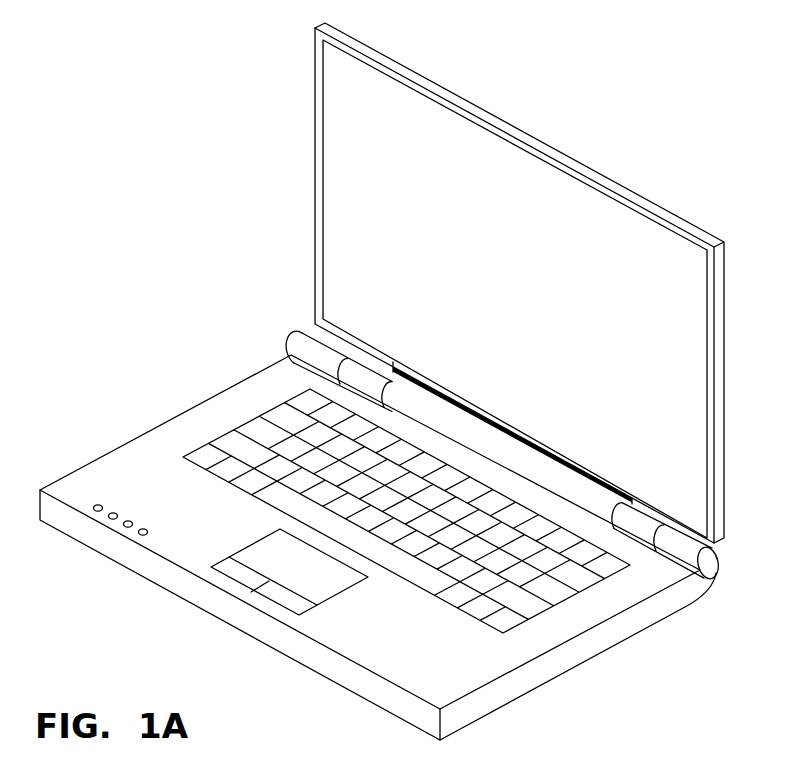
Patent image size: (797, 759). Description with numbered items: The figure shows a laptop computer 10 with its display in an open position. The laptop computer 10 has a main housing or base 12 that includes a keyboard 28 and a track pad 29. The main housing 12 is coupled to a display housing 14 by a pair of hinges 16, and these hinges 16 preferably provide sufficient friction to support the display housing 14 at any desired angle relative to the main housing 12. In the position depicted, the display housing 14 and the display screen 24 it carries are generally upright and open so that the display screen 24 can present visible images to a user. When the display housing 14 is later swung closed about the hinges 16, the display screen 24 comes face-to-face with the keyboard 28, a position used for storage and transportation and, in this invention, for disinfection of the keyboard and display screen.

The laptop computer 10 is at (130, 80).
The main housing 12 is at (78, 470).
The display housing 14 is at (609, 187).
The hinges 16 is at (360, 372).
The display screen 24 is at (505, 172).
The keyboard 28 is at (266, 405).
The track pad 29 is at (252, 557).